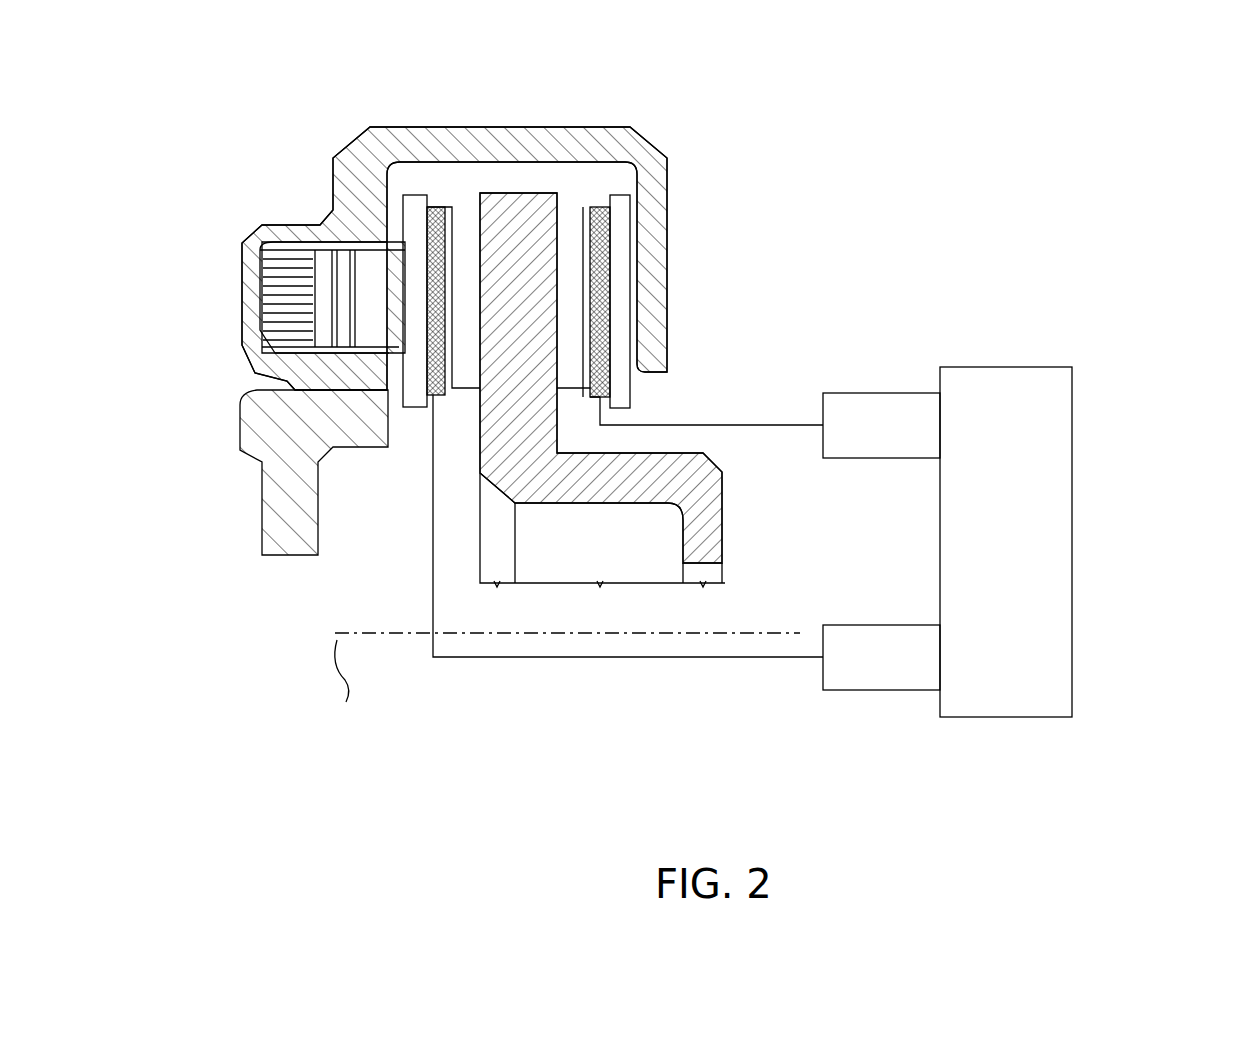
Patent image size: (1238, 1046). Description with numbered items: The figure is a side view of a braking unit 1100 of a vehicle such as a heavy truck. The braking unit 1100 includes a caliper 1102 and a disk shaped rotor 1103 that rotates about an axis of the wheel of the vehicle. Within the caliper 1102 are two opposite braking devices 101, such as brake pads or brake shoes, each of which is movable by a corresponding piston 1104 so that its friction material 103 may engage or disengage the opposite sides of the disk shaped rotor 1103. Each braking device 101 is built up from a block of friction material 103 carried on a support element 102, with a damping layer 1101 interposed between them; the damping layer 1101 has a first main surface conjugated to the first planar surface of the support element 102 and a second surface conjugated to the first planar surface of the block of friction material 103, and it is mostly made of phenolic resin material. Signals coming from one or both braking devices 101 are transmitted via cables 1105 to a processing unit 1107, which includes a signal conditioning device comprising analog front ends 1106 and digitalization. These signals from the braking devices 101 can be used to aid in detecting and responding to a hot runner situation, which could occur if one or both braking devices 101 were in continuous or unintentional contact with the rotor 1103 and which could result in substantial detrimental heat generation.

The braking device 101 is at (457, 195).
The damping layer 1101 is at (437, 205).
The support element 102 is at (378, 128).
The friction material 103 is at (487, 192).
The braking unit 1100 is at (258, 680).
The caliper 1102 is at (667, 185).
The disk shaped rotor 1103 is at (560, 298).
The piston 1104 is at (330, 235).
The cables 1105 is at (770, 425).
The analog front ends 1106 is at (873, 447).
The processing unit 1107 is at (1045, 662).